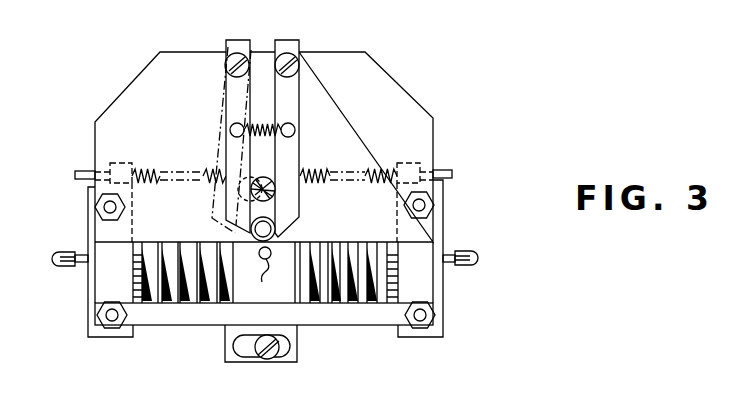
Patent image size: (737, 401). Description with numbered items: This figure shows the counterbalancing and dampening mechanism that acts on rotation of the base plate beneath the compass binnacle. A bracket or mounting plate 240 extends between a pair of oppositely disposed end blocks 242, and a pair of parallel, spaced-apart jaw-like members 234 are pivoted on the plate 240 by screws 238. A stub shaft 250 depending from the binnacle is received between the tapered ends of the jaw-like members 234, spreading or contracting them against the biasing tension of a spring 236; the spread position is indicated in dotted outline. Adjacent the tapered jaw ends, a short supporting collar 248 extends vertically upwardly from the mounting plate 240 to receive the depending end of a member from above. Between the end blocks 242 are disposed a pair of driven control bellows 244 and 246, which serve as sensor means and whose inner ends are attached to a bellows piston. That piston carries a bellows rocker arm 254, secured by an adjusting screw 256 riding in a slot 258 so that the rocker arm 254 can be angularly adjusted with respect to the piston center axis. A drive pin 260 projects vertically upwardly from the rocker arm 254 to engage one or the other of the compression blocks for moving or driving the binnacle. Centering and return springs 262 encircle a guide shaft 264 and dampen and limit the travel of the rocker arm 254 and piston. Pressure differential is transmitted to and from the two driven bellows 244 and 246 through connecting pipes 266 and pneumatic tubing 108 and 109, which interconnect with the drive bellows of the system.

The pneumatic tubing 108 is at (472, 251).
The pneumatic tubing 109 is at (63, 256).
The jaw-like members 234 is at (290, 40).
The spring 236 is at (258, 127).
The screws 238 is at (297, 62).
The mounting plate 240 is at (415, 98).
The end blocks 242 is at (88, 292).
The driven control bellows 244 is at (363, 296).
The driven control bellows 246 is at (197, 296).
The supporting collar 248 is at (277, 237).
The stub shaft 250 is at (270, 178).
The bellows rocker arm 254 is at (280, 363).
The adjusting screw 256 is at (293, 350).
The slot 258 is at (247, 352).
The drive pin 260 is at (254, 268).
The centering and return springs 262 is at (157, 165).
The guide shaft 264 is at (452, 171).
The connecting pipes 266 is at (82, 255).